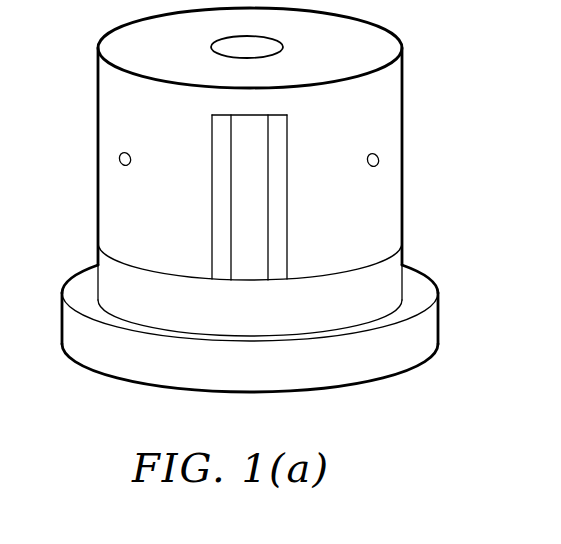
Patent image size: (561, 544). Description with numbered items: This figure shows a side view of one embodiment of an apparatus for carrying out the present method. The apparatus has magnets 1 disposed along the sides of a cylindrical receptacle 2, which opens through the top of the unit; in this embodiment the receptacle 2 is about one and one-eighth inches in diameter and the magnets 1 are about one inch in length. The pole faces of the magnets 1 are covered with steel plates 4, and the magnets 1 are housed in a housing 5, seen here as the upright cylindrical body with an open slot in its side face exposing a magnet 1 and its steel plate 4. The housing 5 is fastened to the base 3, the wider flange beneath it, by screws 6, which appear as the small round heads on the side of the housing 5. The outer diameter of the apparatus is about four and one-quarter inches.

The magnets 1 is at (257, 156).
The cylindrical receptacle 2 is at (283, 47).
The base 3 is at (433, 320).
The steel plates 4 is at (218, 233).
The housing 5 is at (108, 212).
The screws 6 is at (118, 152).